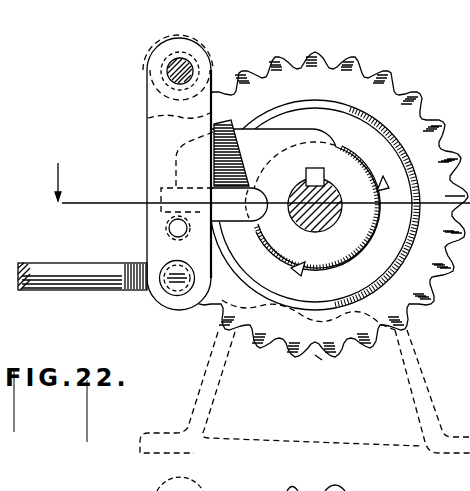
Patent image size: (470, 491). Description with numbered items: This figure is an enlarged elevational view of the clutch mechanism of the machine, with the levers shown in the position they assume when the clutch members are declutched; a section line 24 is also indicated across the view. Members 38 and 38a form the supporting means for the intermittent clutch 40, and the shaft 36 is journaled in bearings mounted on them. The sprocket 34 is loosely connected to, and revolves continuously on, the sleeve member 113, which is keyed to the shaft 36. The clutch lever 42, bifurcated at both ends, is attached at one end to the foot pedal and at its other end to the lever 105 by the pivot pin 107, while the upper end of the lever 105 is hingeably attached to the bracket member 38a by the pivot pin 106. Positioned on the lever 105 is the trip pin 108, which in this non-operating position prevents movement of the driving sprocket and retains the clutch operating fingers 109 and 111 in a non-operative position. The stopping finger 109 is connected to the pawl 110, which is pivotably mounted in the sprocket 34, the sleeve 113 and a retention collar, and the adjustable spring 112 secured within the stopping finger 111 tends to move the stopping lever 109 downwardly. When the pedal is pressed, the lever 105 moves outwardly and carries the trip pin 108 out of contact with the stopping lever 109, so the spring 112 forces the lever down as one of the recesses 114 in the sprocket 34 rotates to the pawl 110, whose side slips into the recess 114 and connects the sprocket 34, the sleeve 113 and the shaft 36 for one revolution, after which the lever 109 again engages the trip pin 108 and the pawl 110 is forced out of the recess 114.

The section line 24- 24 is at (249, 191).
The sprocket 34 is at (372, 81).
The shaft 36 is at (324, 186).
The member 38 is at (208, 408).
The bracket member 38a is at (150, 53).
The intermittent clutch 40 is at (321, 368).
The clutch lever 42 is at (62, 290).
The lever 105 is at (147, 135).
The pivot pin 106 is at (188, 68).
The pivot pin 107 is at (175, 288).
The trip pin 108 is at (168, 227).
The stopping finger 109 is at (162, 188).
The pawl 110 is at (256, 211).
The stopping finger 111 is at (240, 128).
The adjustable spring 112 is at (241, 160).
The sleeve member 113 is at (348, 243).
The recess 114 is at (383, 184).